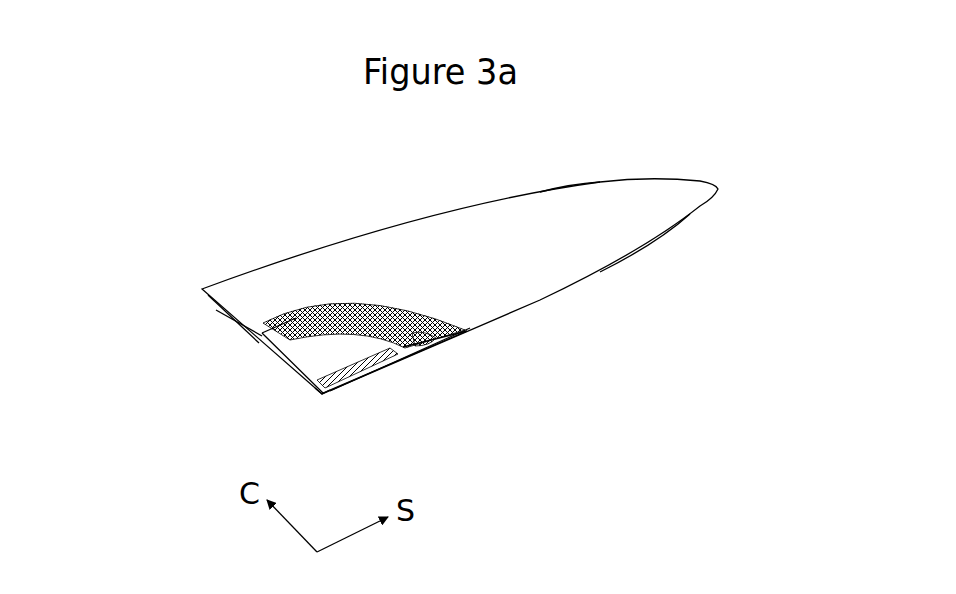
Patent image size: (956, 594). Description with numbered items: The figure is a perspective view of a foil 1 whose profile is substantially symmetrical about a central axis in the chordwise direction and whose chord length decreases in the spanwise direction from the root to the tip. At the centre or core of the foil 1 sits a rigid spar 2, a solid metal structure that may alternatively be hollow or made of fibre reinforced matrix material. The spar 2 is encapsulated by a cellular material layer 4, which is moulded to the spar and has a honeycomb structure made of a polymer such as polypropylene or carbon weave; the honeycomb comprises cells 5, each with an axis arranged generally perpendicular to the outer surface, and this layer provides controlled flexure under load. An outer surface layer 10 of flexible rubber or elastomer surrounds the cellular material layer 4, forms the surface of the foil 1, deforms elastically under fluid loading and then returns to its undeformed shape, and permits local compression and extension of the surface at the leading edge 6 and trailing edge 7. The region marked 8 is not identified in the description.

The foil 1 is at (198, 191).
The rigid spar 2 is at (265, 337).
The cellular material layer 4 is at (372, 320).
The cell 5 is at (412, 335).
The leading edge 6 is at (640, 252).
The trailing edge 7 is at (594, 184).
The root corner 8 is at (342, 410).
The outer surface layer 10 is at (297, 275).